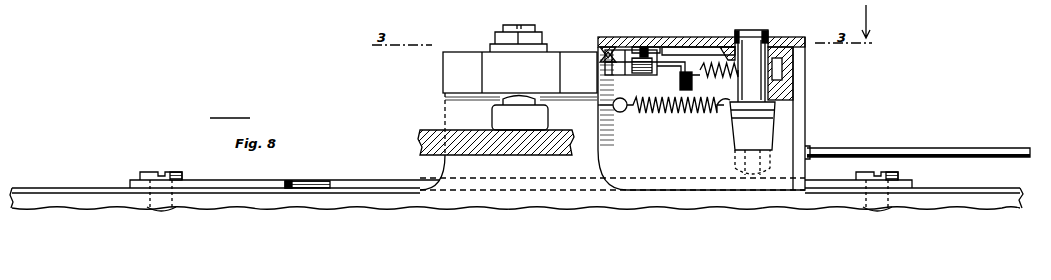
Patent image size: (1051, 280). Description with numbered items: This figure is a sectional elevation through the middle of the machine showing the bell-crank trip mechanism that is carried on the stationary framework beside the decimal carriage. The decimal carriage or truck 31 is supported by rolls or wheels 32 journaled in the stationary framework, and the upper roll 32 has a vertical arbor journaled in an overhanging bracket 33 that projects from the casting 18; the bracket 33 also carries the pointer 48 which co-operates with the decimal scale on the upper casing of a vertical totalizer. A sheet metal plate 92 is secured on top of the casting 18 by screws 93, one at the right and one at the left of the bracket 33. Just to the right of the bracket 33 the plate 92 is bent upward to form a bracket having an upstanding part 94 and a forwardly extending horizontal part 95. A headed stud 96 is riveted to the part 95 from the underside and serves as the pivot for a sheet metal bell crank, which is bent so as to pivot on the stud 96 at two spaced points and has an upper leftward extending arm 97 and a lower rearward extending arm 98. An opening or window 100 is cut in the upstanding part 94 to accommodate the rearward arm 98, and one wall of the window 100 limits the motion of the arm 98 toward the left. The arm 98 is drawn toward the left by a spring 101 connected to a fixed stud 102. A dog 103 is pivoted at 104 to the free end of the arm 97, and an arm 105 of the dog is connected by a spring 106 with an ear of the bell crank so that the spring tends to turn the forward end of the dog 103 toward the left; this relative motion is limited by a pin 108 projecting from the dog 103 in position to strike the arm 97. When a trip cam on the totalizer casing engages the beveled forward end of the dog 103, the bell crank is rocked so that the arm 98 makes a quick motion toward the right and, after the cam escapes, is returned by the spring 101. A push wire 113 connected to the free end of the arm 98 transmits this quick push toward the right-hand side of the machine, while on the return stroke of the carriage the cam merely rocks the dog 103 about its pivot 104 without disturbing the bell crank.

The casting 18 is at (77, 198).
The decimal carriage or truck 31 is at (420, 143).
The roll or wheel 32 is at (492, 118).
The overhanging bracket 33 is at (459, 55).
The pointer 48 is at (547, 47).
The sheet metal plate 92 is at (217, 181).
The screws 93 is at (162, 172).
The upstanding part of bracket 94 is at (806, 116).
The forwardly extending horizontal part 95 is at (716, 60).
The headed stud 96 is at (762, 32).
The upper leftward extending arm of bell crank 97 is at (682, 38).
The lower rearward extending arm of bell crank 98 is at (776, 130).
The opening or window 100 is at (807, 144).
The spring 101 is at (682, 112).
The fixed stud 102 is at (627, 110).
The dog 103 is at (606, 60).
The pivot 104 is at (633, 75).
The arm of dog 105 is at (680, 84).
The spring 106 is at (736, 36).
The pin 108 is at (650, 40).
The push wire 113 is at (954, 148).